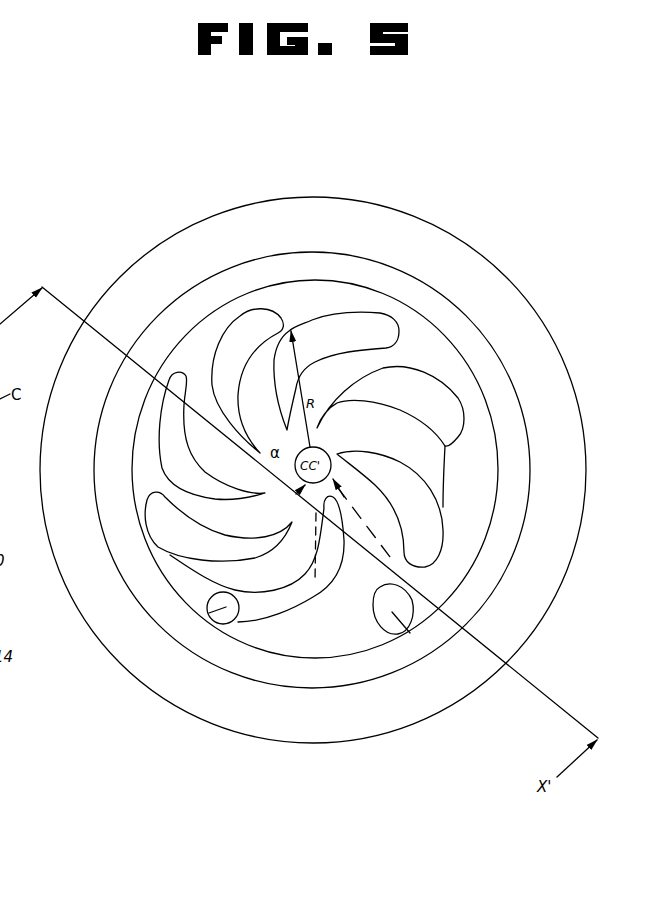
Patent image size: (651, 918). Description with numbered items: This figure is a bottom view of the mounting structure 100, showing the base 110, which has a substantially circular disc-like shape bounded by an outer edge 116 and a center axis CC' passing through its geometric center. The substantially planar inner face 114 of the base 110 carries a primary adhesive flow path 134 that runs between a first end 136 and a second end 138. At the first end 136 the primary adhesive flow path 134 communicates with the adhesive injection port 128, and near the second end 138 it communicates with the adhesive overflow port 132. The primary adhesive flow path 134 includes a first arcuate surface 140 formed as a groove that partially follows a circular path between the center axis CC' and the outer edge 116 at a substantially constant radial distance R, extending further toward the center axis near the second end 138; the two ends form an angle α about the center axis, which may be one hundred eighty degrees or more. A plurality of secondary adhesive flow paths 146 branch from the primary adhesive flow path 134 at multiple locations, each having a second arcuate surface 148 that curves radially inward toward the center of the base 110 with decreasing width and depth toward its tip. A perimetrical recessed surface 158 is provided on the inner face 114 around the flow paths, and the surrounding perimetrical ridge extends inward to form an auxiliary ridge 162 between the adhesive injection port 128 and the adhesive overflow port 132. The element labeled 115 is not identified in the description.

The mounting structure 100 is at (433, 187).
The base 110 is at (197, 253).
The inner face 114 is at (350, 659).
The outer ring 115 is at (100, 659).
The outer edge 116 is at (450, 706).
The adhesive injection port 128 is at (412, 633).
The adhesive overflow port 132 is at (212, 617).
The primary adhesive flow path 134 is at (203, 343).
The first end 136 is at (427, 587).
The second end 138 is at (314, 597).
The first arcuate surface 140 is at (470, 515).
The secondary adhesive flow paths 146 is at (327, 337).
The second arcuate surface 148 is at (263, 325).
The perimetrical recessed surface 158 is at (340, 716).
The auxiliary ridge 162 is at (240, 668).